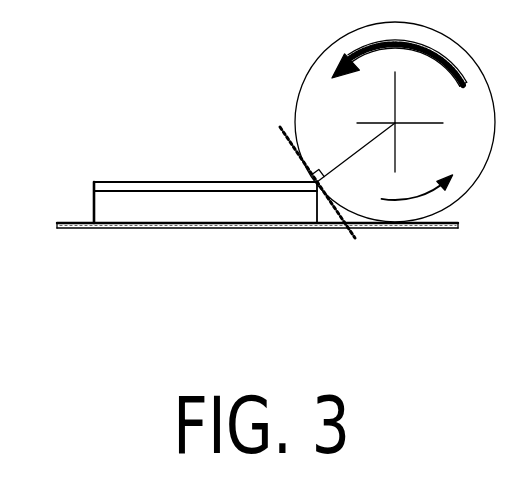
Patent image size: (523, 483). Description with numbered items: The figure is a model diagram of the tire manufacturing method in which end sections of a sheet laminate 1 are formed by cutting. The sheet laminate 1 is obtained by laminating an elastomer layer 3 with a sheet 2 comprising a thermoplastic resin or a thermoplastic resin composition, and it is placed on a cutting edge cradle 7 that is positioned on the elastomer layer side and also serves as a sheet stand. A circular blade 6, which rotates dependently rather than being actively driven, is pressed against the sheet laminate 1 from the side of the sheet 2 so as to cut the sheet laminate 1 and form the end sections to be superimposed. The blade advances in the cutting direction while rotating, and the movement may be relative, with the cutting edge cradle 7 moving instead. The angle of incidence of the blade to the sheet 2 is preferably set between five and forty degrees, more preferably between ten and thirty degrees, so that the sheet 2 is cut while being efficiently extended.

The sheet laminate 1 is at (93, 188).
The sheet 2 is at (222, 190).
The elastomer layer 3 is at (163, 208).
The circular blade 6 is at (322, 90).
The cutting edge cradle 7 is at (107, 230).